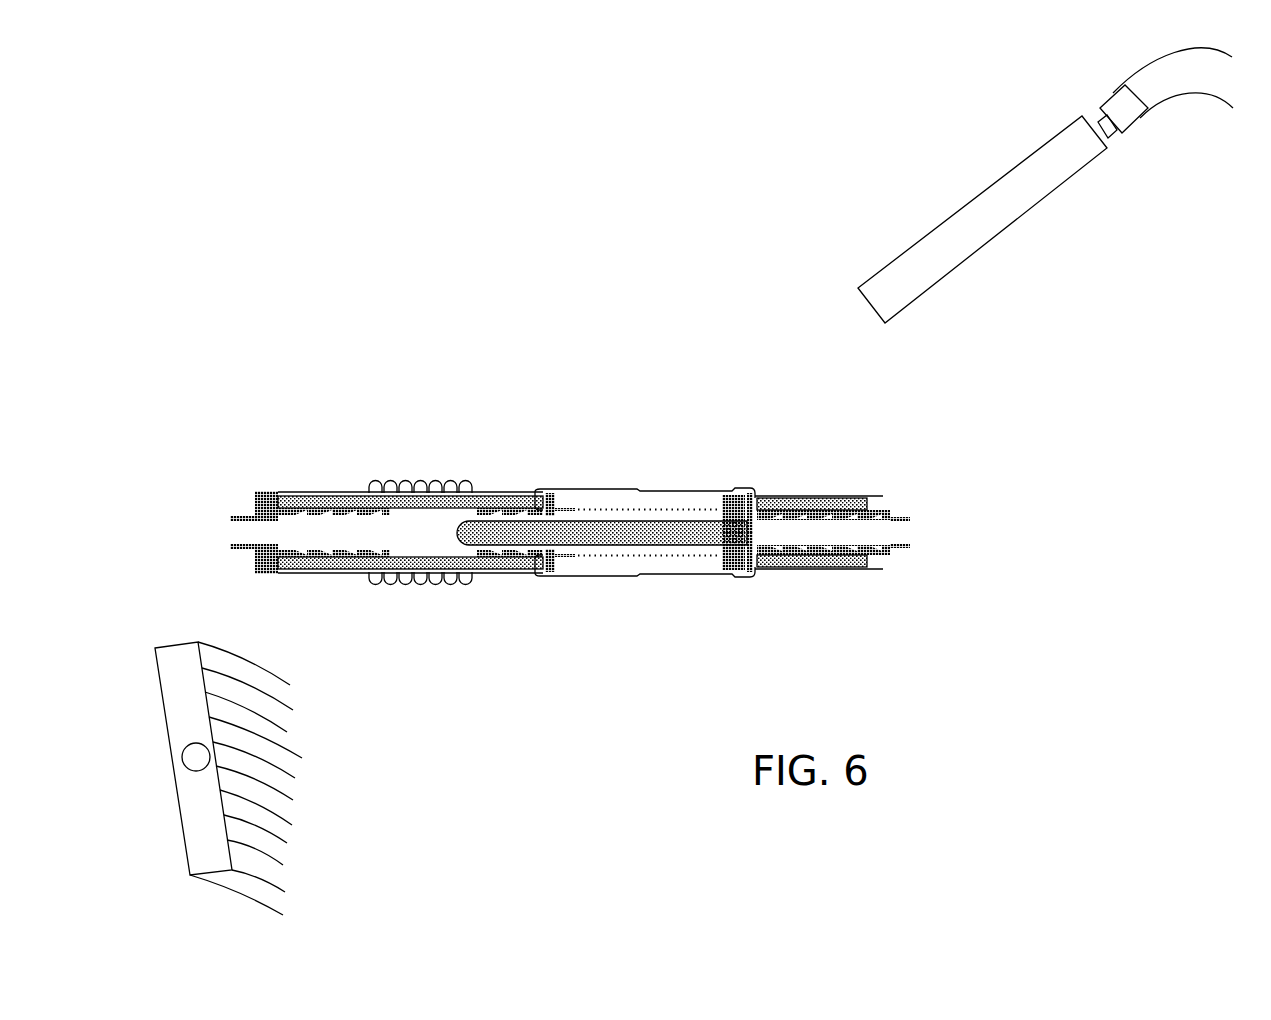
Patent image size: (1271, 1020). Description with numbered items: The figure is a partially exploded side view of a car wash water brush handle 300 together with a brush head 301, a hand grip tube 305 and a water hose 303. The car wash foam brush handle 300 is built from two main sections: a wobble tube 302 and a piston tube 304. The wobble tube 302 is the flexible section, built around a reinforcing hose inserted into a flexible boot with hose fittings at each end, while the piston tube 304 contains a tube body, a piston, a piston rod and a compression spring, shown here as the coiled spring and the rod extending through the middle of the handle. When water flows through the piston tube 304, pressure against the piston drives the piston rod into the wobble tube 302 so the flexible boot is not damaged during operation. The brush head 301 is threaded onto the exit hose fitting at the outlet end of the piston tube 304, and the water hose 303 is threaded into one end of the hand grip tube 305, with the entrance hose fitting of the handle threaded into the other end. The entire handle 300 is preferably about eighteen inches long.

The car wash foam brush handle 300 is at (575, 476).
The brush head 301 is at (170, 643).
The wobble tube 302 is at (340, 460).
The water hose 303 is at (1187, 98).
The piston tube 304 is at (797, 487).
The hand grip tube 305 is at (1032, 208).